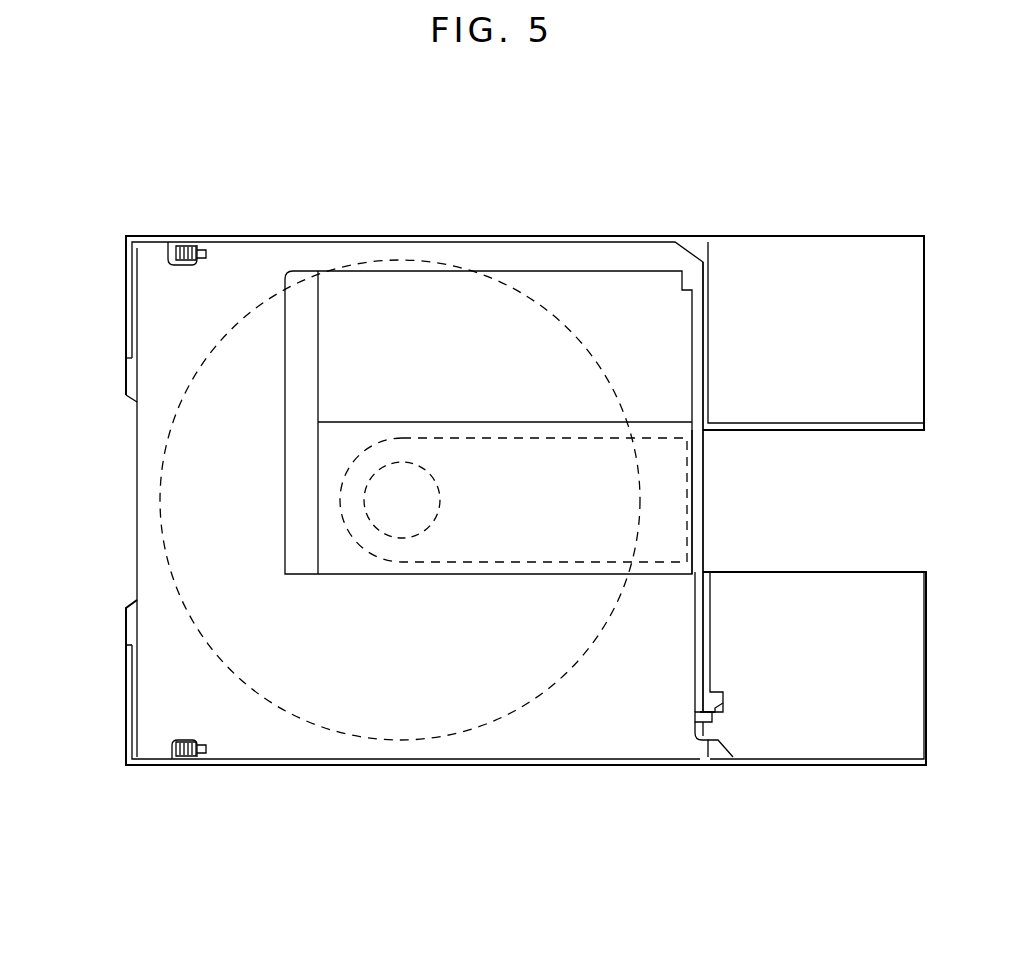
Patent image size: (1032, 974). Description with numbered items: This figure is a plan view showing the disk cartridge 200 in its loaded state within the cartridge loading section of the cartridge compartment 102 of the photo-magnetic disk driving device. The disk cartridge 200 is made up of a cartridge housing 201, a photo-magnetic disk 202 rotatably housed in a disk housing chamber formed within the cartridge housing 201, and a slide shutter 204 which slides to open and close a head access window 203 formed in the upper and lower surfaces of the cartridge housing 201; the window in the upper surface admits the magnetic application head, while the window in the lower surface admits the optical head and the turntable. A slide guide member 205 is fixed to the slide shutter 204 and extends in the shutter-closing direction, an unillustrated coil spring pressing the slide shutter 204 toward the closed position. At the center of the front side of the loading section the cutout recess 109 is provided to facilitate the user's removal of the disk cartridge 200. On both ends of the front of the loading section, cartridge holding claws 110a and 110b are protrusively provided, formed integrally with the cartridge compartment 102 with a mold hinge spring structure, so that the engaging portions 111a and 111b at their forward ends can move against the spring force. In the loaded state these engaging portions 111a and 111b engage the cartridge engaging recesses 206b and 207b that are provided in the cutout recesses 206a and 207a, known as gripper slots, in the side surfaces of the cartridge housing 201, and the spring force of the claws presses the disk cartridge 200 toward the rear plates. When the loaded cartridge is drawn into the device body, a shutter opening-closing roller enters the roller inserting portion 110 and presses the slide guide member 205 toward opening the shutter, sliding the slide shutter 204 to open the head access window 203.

The cartridge compartment 102 is at (620, 228).
The cutout recess 109 is at (128, 400).
The roller inserting portion 110 is at (718, 732).
The cartridge holding claw 110a is at (183, 248).
The cartridge holding claw 110b is at (186, 758).
The engaging portion 111a is at (205, 247).
The engaging portion 111b is at (202, 757).
The disk cartridge 200 is at (621, 716).
The cartridge housing 201 is at (345, 748).
The photo-magnetic disk 202 is at (496, 722).
The head access window 203 is at (502, 437).
The slide shutter 204 is at (667, 563).
The slide guide member 205 is at (713, 716).
The cutout recess 206a is at (172, 244).
The cartridge engaging recess 206b is at (204, 255).
The cutout recess 207a is at (172, 757).
The cartridge engaging recess 207b is at (204, 751).